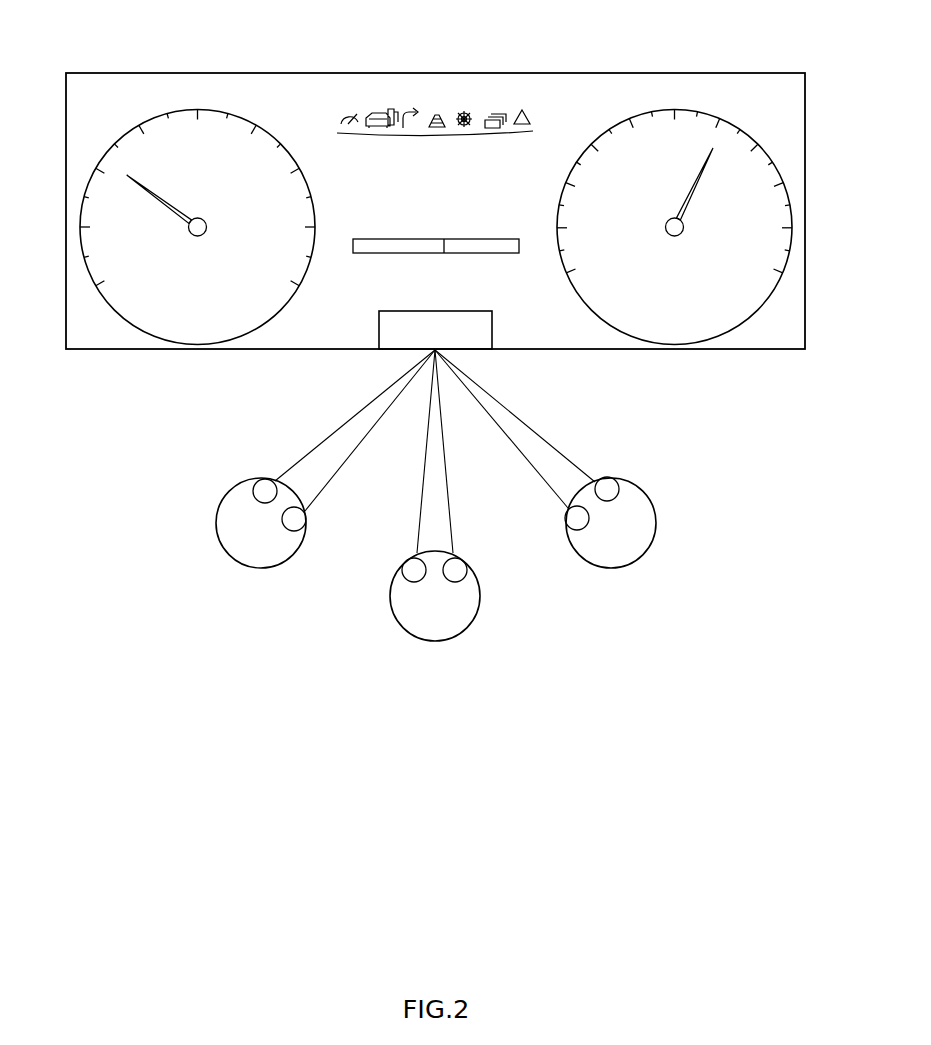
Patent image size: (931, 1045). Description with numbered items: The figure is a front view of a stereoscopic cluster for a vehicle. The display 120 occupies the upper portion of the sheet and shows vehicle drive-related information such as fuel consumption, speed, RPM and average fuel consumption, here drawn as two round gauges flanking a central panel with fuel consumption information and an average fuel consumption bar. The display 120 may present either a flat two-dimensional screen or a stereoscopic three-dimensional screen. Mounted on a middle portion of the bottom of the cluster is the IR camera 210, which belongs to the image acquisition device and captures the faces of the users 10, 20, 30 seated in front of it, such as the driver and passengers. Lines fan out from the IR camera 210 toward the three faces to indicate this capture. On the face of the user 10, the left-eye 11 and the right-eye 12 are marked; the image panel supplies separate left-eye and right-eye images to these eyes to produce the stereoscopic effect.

The display 120 is at (434, 72).
The IR camera 210 is at (492, 329).
The user 10 is at (258, 570).
The left-eye 11 is at (263, 479).
The right-eye 12 is at (296, 519).
The user 20 is at (433, 643).
The user 30 is at (608, 570).